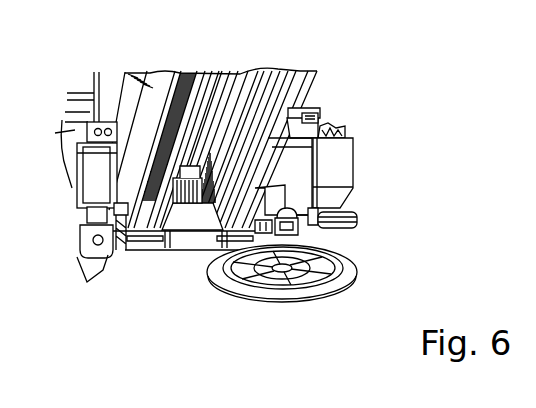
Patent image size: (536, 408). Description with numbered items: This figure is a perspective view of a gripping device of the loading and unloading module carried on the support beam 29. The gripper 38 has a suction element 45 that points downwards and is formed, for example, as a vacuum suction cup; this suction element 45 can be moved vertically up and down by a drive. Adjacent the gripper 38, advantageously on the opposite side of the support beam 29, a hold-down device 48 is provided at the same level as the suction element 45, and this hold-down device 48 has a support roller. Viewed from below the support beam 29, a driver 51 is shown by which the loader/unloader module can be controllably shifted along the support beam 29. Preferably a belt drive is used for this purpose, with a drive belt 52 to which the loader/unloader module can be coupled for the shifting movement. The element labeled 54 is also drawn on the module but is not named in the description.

The support beam 29 is at (218, 70).
The drive belt 52 is at (240, 100).
The hold-down device 48 is at (85, 277).
The cross member 54 is at (123, 215).
The driver 51 is at (193, 218).
The suction element 45 is at (283, 302).
The gripper 38 is at (324, 306).